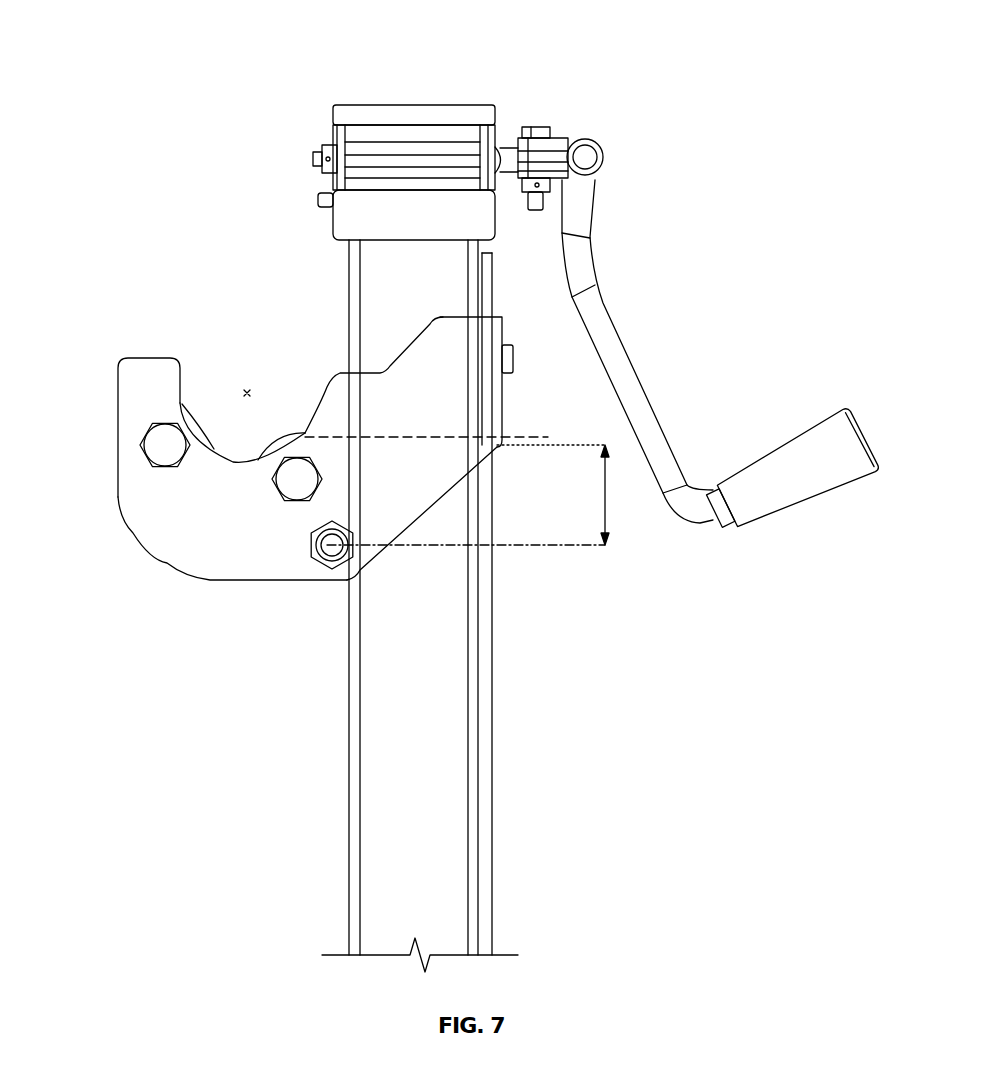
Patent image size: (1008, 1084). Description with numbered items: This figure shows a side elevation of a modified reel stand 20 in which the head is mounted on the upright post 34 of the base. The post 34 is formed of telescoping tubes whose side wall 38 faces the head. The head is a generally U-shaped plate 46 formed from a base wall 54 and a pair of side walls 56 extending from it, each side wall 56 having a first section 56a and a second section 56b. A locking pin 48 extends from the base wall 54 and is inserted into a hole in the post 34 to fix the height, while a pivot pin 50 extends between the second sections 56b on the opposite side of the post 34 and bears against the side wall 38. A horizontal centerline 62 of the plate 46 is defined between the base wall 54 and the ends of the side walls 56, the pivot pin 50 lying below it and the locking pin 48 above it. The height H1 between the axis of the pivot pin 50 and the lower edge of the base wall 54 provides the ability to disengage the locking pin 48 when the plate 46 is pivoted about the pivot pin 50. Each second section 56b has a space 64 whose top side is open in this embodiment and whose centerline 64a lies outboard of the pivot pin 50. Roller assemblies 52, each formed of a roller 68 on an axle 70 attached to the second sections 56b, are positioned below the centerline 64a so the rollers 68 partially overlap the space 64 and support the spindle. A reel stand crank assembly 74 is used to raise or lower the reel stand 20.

The reel stand 20 is at (517, 83).
The reel stand crank assembly 74 is at (577, 125).
The post 34 is at (430, 777).
The side wall 38 is at (492, 708).
The base wall 54 is at (495, 322).
The locking pin 48 is at (513, 358).
The side wall 56 is at (165, 527).
The first section 56a is at (413, 483).
The second section 56b is at (193, 558).
The plate 46 is at (145, 352).
The space 64 is at (230, 460).
The roller 68 is at (182, 407).
The centerline 64a is at (247, 393).
The roller assembly 52 is at (143, 438).
The axle 70 is at (155, 455).
The pivot pin 50 is at (327, 545).
The horizontal centerline 62 is at (537, 437).
The height H1 is at (605, 478).